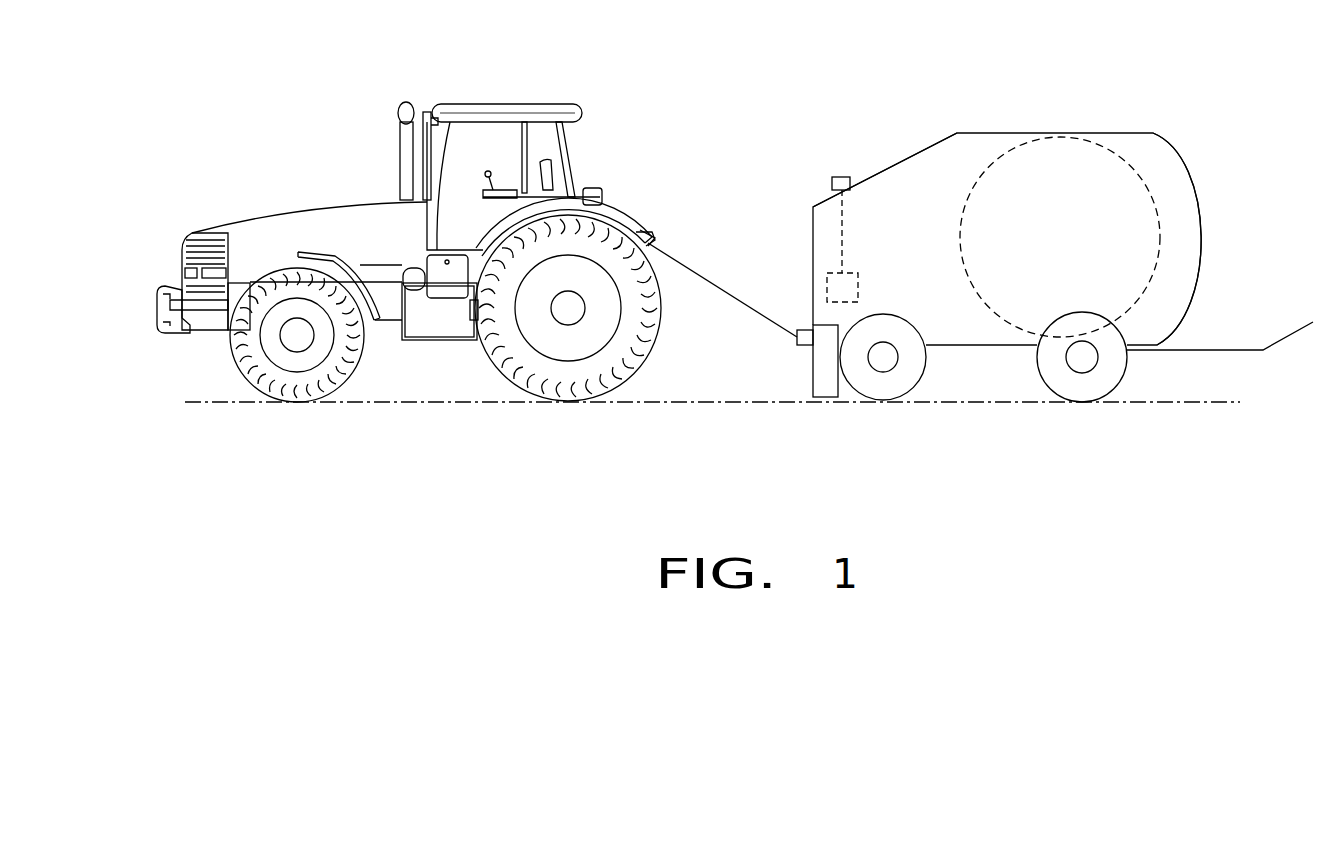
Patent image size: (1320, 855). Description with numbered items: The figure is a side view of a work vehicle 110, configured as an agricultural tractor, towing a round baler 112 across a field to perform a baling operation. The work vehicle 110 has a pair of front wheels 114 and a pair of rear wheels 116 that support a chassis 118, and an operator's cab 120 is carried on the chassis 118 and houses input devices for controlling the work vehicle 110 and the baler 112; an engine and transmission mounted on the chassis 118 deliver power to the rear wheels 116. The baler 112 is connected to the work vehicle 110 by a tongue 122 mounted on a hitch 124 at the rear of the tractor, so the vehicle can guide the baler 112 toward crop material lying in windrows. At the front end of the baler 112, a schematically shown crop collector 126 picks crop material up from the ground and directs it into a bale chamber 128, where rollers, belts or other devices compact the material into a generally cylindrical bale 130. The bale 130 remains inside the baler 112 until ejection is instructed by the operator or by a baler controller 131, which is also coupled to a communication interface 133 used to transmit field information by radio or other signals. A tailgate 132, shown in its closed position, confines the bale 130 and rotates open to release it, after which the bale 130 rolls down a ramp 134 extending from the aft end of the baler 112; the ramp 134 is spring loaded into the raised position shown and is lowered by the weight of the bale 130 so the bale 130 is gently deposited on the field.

The work vehicle 110 is at (322, 193).
The baler 112 is at (963, 122).
The front wheels 114 is at (242, 368).
The rear wheels 116 is at (640, 357).
The chassis 118 is at (412, 342).
The operator's cab 120 is at (485, 150).
The tongue 122 is at (723, 287).
The hitch 124 is at (657, 240).
The crop collector 126 is at (823, 373).
The bale chamber 128 is at (895, 165).
The bale 130 is at (1153, 197).
The baler controller 131 is at (858, 283).
The tailgate 132 is at (1152, 135).
The communication interface 133 is at (832, 182).
The ramp 134 is at (1228, 350).